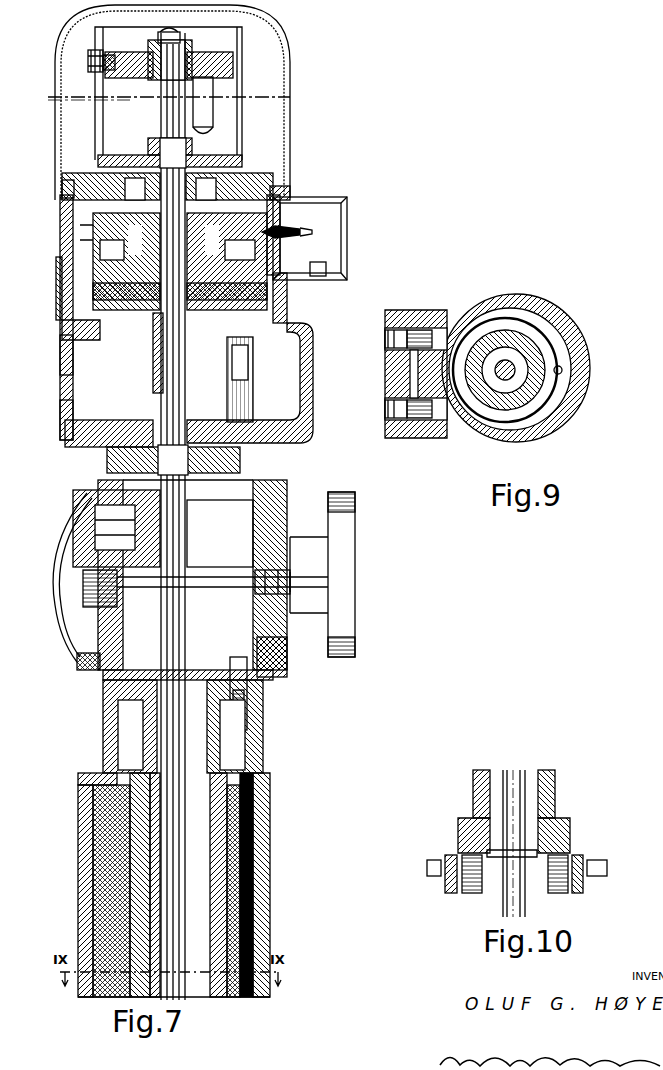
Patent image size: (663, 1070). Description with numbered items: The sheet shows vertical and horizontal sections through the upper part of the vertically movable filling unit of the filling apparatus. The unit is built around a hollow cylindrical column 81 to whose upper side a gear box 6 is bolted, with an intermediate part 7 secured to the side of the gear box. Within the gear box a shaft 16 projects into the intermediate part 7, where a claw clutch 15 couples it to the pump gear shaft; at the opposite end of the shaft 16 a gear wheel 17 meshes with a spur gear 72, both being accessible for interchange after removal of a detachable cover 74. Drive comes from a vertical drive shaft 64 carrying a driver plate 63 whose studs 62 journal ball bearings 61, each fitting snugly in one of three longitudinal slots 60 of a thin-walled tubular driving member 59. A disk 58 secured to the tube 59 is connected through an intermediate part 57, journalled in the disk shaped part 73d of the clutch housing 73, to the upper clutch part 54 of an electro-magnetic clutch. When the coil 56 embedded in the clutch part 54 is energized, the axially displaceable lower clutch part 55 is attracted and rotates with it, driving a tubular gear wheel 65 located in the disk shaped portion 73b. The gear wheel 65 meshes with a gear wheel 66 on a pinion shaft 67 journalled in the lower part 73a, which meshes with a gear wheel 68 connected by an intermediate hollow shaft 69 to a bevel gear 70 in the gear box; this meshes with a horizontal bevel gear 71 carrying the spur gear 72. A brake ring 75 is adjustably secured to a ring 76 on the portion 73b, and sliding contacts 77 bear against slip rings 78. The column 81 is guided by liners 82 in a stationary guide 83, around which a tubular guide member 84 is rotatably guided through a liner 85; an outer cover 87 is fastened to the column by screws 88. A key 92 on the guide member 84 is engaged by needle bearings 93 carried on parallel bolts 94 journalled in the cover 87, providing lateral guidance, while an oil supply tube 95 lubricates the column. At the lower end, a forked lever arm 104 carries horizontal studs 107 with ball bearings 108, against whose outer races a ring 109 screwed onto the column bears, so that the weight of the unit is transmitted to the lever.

In FIG. 7, the gear box 6 is at (268, 670).
In FIG. 7, the intermediate part 7 is at (340, 632).
In FIG. 7, the claw clutch 15 is at (306, 588).
In FIG. 7, the shaft 16 is at (222, 588).
In FIG. 7, the gear wheel 17 is at (90, 605).
In FIG. 7, the upper clutch part 54 is at (280, 197).
In FIG. 7, the lower clutch part 55 is at (260, 291).
In FIG. 7, the coil 56 is at (240, 258).
In FIG. 7, the intermediate part 57 is at (225, 186).
In FIG. 7, the disk 58 is at (135, 155).
In FIG. 7, the tubular driving member 59 is at (285, 108).
In FIG. 7, the longitudinally extending slots 60 is at (100, 116).
In FIG. 7, the ball bearing 61 is at (90, 55).
In FIG. 7, the studs 62 is at (109, 56).
In FIG. 7, the driver plate 63 is at (142, 70).
In FIG. 7, the vertical drive shaft 64 is at (186, 52).
In FIG. 9, the vertical drive shaft 64 is at (515, 360).
In FIG. 10, the vertical drive shaft 64 is at (526, 908).
In FIG. 7, the tubular gear wheel 65 is at (153, 373).
In FIG. 7, the gear wheel 66 is at (302, 380).
In FIG. 7, the pinion shaft 67 is at (254, 399).
In FIG. 7, the gear wheel 68 is at (140, 408).
In FIG. 7, the intermediate hollow shaft 69 is at (240, 455).
In FIG. 7, the bevel gear 70 is at (200, 510).
In FIG. 7, the bevel gear 71 is at (150, 543).
In FIG. 7, the spur gear 72 is at (87, 520).
In FIG. 7, the clutch housing 73 is at (60, 213).
In FIG. 7, the lower part of housing 73a is at (68, 373).
In FIG. 7, the disk shaped portion of housing 73b is at (82, 356).
In FIG. 7, the disk shaped part of housing 73d is at (90, 185).
In FIG. 7, the detachable cover 74 is at (75, 655).
In FIG. 7, the brake ring 75 is at (60, 312).
In FIG. 7, the ring 76 is at (62, 330).
In FIG. 7, the sliding contact 77 is at (295, 230).
In FIG. 7, the slip rings 78 is at (80, 248).
In FIG. 7, the hollow cylindrical column 81 is at (208, 725).
In FIG. 9, the hollow cylindrical column 81 is at (568, 400).
In FIG. 10, the hollow cylindrical column 81 is at (473, 793).
In FIG. 7, the liners 82 is at (240, 745).
In FIG. 7, the vertical stationary guide 83 is at (240, 763).
In FIG. 9, the vertical stationary guide 83 is at (540, 430).
In FIG. 7, the tubular guide member 84 is at (245, 786).
In FIG. 9, the tubular guide member 84 is at (502, 432).
In FIG. 7, the liner 85 is at (240, 806).
In FIG. 7, the outer cover 87 is at (262, 824).
In FIG. 9, the outer cover 87 is at (452, 318).
In FIG. 7, the screws 88 is at (238, 660).
In FIG. 7, the key 92 is at (105, 995).
In FIG. 9, the key 92 is at (455, 438).
In FIG. 9, the needle bearings 93 is at (420, 328).
In FIG. 9, the bolts 94 is at (395, 328).
In FIG. 7, the oil supply tube 95 is at (240, 911).
In FIG. 9, the oil supply tube 95 is at (562, 370).
In FIG. 10, the lever arm 104 is at (580, 893).
In FIG. 10, the horizontal stud 107 is at (452, 893).
In FIG. 10, the ball bearing 108 is at (472, 893).
In FIG. 10, the ring 109 is at (470, 828).